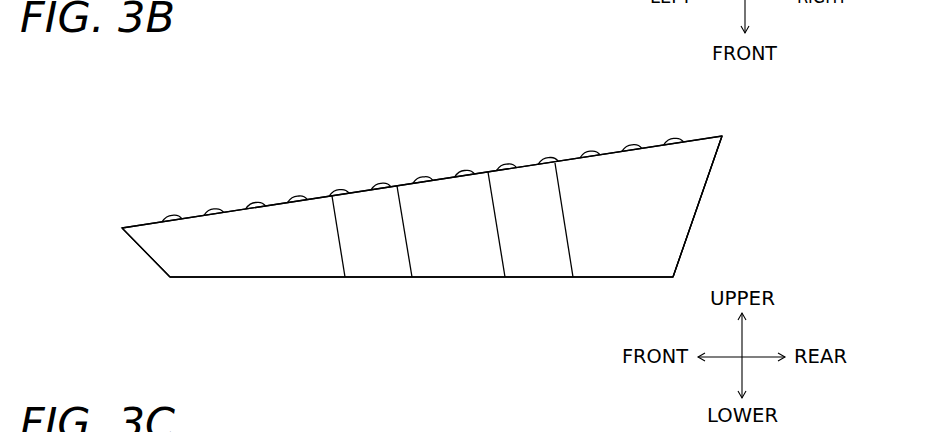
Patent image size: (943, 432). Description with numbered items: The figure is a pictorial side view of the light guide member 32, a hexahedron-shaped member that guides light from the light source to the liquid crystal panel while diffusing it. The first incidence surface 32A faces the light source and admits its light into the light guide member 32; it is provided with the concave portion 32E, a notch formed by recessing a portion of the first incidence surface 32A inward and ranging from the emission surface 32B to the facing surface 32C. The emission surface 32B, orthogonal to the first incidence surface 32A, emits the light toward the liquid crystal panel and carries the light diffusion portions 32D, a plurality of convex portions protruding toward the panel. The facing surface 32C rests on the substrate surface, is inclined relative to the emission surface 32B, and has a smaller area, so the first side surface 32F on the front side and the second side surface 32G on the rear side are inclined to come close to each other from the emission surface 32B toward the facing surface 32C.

The light guide member 32 is at (443, 157).
The first incidence surface 32A is at (681, 184).
The emission surface 32B is at (278, 200).
The facing surface 32C is at (297, 276).
The light diffusion portions 32D is at (170, 217).
The concave portion 32E is at (449, 262).
The first side surface 32F is at (146, 254).
The second side surface 32G is at (693, 226).